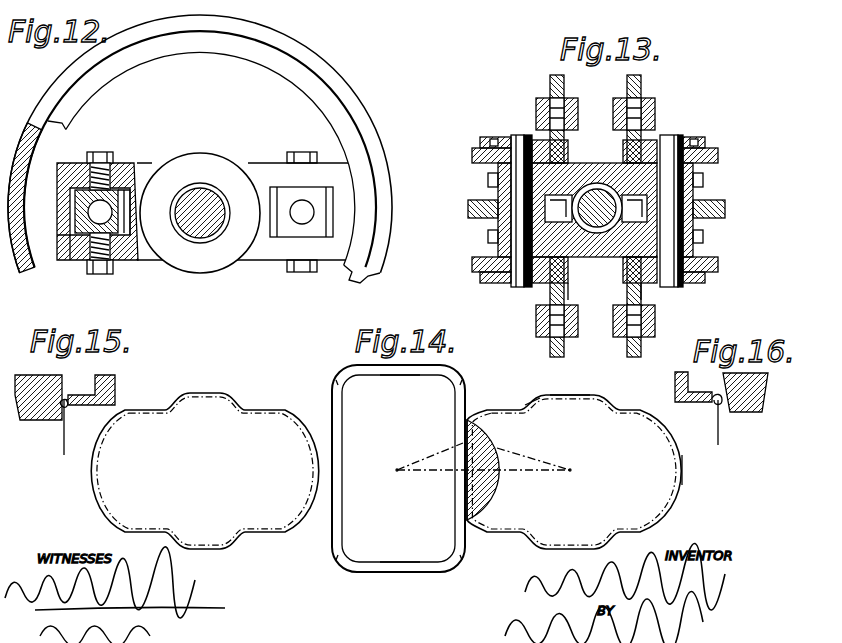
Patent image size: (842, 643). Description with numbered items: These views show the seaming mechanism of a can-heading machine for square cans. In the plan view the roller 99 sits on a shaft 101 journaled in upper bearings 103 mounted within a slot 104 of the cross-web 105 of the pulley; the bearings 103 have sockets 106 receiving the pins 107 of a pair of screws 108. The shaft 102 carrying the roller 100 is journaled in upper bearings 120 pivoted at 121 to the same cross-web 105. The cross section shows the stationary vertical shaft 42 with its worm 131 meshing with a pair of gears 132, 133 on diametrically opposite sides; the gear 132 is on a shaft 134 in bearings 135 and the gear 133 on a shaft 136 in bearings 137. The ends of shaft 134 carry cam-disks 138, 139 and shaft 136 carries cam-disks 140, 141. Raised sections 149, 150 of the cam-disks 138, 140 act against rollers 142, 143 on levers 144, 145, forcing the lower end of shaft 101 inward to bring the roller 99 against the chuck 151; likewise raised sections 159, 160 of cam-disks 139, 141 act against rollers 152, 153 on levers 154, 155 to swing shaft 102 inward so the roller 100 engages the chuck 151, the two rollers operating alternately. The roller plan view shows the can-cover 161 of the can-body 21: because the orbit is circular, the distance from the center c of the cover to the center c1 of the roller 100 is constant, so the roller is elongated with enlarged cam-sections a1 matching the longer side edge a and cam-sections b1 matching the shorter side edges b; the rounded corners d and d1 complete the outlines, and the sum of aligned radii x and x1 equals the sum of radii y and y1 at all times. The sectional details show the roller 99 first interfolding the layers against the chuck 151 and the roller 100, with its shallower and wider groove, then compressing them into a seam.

In FIG. 15, the can-body 21 is at (64, 440).
In FIG. 16, the can-body 21 is at (720, 437).
In FIG. 13, the stationary vertical shaft 42 is at (596, 200).
In FIG. 15, the seaming roller 99 is at (164, 462).
In FIG. 14, the seaming roller 100 is at (574, 472).
In FIG. 16, the seaming roller 100 is at (762, 412).
In FIG. 12, the shaft 101 is at (122, 262).
In FIG. 12, the shaft 102 is at (300, 215).
In FIG. 12, the upper bearings 103 is at (124, 185).
In FIG. 12, the slot 104 is at (76, 190).
In FIG. 12, the cross-web 105 is at (150, 172).
In FIG. 12, the sockets 106 is at (62, 215).
In FIG. 12, the pins 107 is at (68, 262).
In FIG. 12, the screws 108 is at (102, 158).
In FIG. 12, the upper bearings 120 is at (312, 195).
In FIG. 12, the pivot 121 is at (300, 155).
In FIG. 13, the worm 131 is at (597, 236).
In FIG. 13, the gear 132 is at (470, 214).
In FIG. 13, the gear 133 is at (726, 212).
In FIG. 13, the shaft 134 is at (520, 288).
In FIG. 13, the bearings 135 is at (498, 190).
In FIG. 13, the shaft 136 is at (675, 286).
In FIG. 13, the bearings 137 is at (703, 186).
In FIG. 13, the cam-disk 138 is at (472, 156).
In FIG. 13, the cam-disk 139 is at (482, 272).
In FIG. 13, the cam-disk 140 is at (718, 155).
In FIG. 13, the cam-disk 141 is at (718, 268).
In FIG. 13, the roller 142 is at (550, 88).
In FIG. 13, the roller 143 is at (642, 88).
In FIG. 13, the lever 144 is at (536, 125).
In FIG. 13, the lever 145 is at (656, 123).
In FIG. 13, the raised section 149 is at (482, 146).
In FIG. 13, the raised section 150 is at (705, 146).
In FIG. 15, the chuck 151 is at (112, 385).
In FIG. 16, the chuck 151 is at (677, 385).
In FIG. 13, the roller 152 is at (550, 352).
In FIG. 13, the roller 153 is at (627, 355).
In FIG. 13, the lever 154 is at (536, 325).
In FIG. 13, the lever 155 is at (656, 325).
In FIG. 13, the raised section 159 is at (568, 280).
In FIG. 13, the raised section 160 is at (632, 292).
In FIG. 15, the can-cover 161 is at (66, 404).
In FIG. 14, the can-cover 161 is at (398, 468).
In FIG. 16, the can-cover 161 is at (714, 404).
In FIG. 14, the longer side edge a is at (335, 517).
In FIG. 14, the shorter side edge b is at (400, 370).
In FIG. 14, the center of can-cover c is at (389, 472).
In FIG. 14, the corner d is at (335, 380).
In FIG. 14, the radius x is at (430, 455).
In FIG. 14, the radius y is at (483, 485).
In FIG. 14, the enlarged cam-sections a1 is at (475, 420).
In FIG. 14, the cam-sections b1 is at (570, 400).
In FIG. 14, the center of roller c1 is at (580, 471).
In FIG. 14, the corner d1 is at (535, 405).
In FIG. 14, the radius x1 is at (533, 456).
In FIG. 14, the radius y1 is at (529, 492).